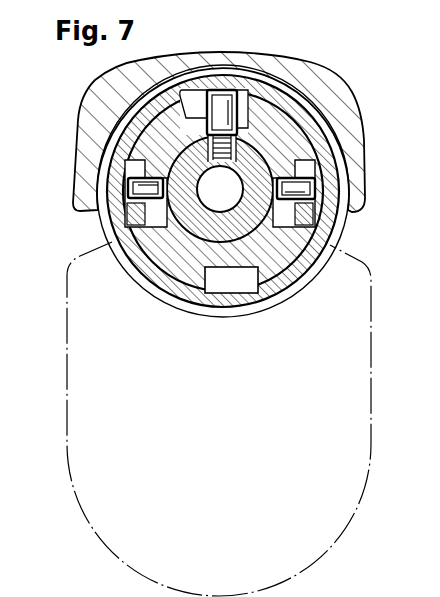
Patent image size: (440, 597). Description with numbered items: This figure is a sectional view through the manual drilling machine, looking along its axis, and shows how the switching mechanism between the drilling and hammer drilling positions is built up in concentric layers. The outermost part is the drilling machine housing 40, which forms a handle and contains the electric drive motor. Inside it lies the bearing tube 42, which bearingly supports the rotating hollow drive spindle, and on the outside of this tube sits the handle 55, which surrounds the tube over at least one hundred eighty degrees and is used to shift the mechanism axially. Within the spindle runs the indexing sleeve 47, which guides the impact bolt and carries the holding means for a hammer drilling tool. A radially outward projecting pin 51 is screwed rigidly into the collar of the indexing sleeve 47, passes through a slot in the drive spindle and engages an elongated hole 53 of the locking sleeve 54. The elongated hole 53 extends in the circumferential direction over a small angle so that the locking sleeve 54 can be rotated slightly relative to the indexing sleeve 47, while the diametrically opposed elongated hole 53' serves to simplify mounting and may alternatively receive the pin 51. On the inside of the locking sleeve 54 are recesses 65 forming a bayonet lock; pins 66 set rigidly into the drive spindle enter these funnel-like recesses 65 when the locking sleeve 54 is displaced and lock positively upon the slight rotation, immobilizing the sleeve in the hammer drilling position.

The drilling machine housing 40 is at (364, 408).
The bearing tube 42 is at (299, 278).
The indexing sleeve 47 is at (148, 268).
The pin 51 is at (237, 92).
The elongated hole 53 is at (214, 85).
The elongated hole 53' is at (231, 315).
The locking sleeve 54 is at (128, 248).
The handle 55 is at (300, 72).
The recesses 65 is at (127, 225).
The pins 66 is at (150, 188).